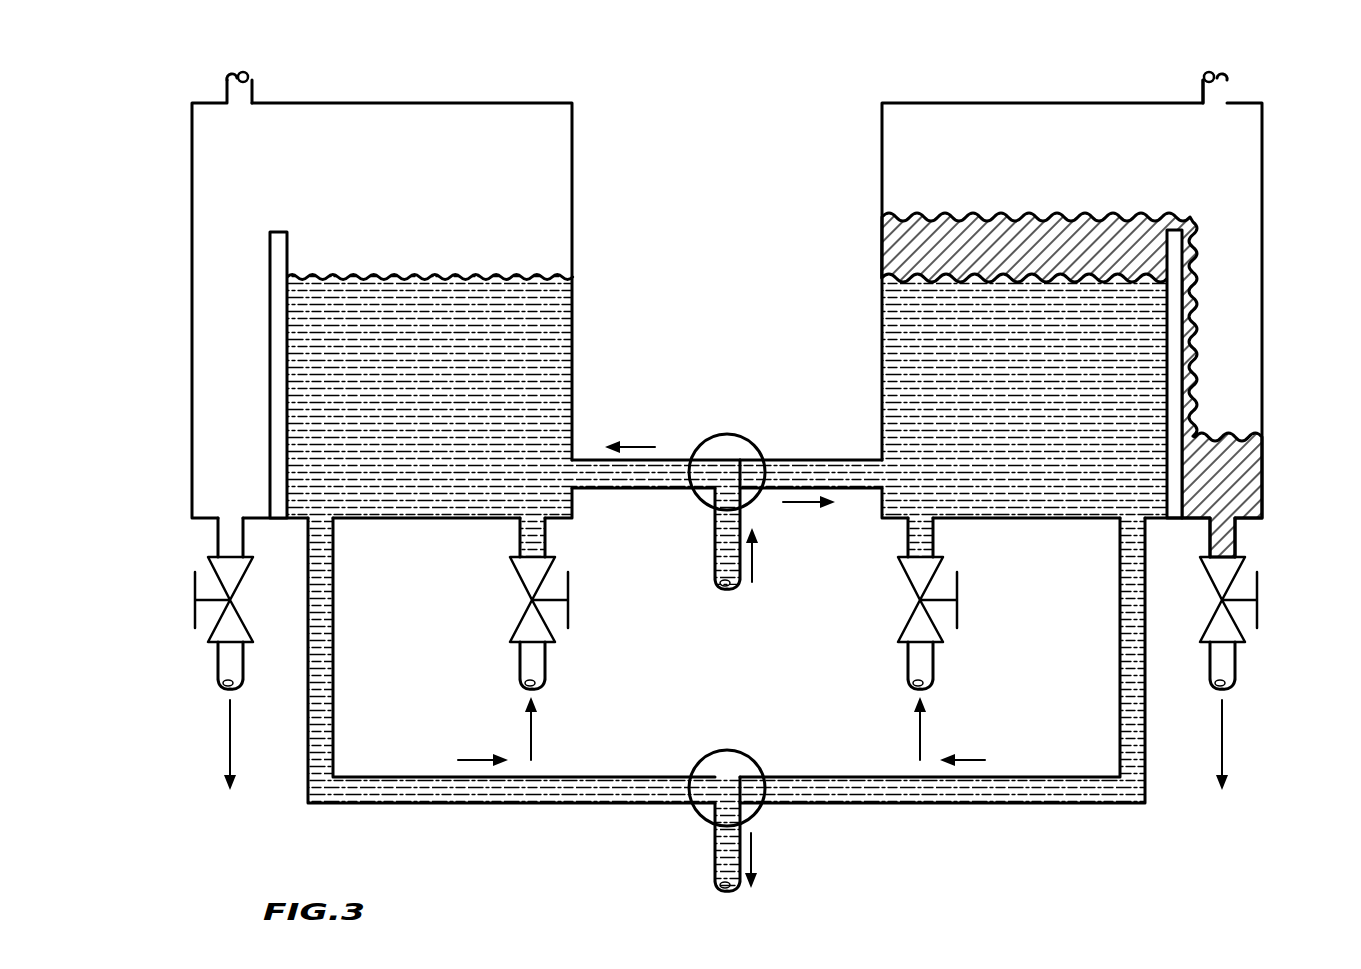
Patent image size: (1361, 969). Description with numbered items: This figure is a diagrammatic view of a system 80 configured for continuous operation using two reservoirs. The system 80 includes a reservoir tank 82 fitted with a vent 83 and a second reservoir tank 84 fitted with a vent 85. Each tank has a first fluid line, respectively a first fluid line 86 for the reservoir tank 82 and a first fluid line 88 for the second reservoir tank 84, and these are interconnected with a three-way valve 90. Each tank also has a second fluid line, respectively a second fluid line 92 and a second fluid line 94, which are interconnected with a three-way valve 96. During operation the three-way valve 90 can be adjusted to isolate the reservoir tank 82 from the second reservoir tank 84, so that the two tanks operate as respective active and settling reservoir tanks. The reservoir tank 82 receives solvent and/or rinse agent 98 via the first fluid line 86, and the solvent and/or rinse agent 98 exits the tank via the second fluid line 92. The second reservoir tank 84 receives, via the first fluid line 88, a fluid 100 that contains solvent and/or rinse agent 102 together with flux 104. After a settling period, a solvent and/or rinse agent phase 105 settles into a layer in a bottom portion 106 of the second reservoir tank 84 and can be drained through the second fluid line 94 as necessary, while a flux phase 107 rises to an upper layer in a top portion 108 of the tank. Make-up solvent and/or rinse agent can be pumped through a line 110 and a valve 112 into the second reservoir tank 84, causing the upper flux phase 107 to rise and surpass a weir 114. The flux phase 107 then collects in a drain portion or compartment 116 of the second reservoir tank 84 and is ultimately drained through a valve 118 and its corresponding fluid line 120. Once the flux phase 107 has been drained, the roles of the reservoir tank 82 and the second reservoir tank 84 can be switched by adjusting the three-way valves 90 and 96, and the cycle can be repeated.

The system 80 is at (768, 76).
The reservoir tank 82 is at (192, 180).
The vent 83 is at (243, 72).
The second reservoir tank 84 is at (1262, 180).
The vent 85 is at (1209, 72).
The first fluid line 86 is at (600, 488).
The first fluid line 88 is at (853, 488).
The three-way valve 90 is at (758, 497).
The second fluid line 92 is at (308, 757).
The second fluid line 94 is at (1145, 757).
The three-way valve 96 is at (695, 815).
The solvent and/or rinse agent 98 is at (528, 372).
The fluid 100 is at (773, 472).
The solvent and/or rinse agent 102 is at (818, 472).
The flux 104 is at (864, 472).
The solvent and/or rinse agent phase 105 is at (1150, 325).
The bottom portion 106 is at (882, 317).
The flux phase 107 is at (1025, 245).
The top portion 108 is at (882, 255).
The line 110 is at (908, 665).
The valve 112 is at (957, 590).
The weir 114 is at (1173, 262).
The drain portion or compartment 116 is at (1262, 452).
The valve 118 is at (1257, 590).
The fluid line 120 is at (1237, 665).